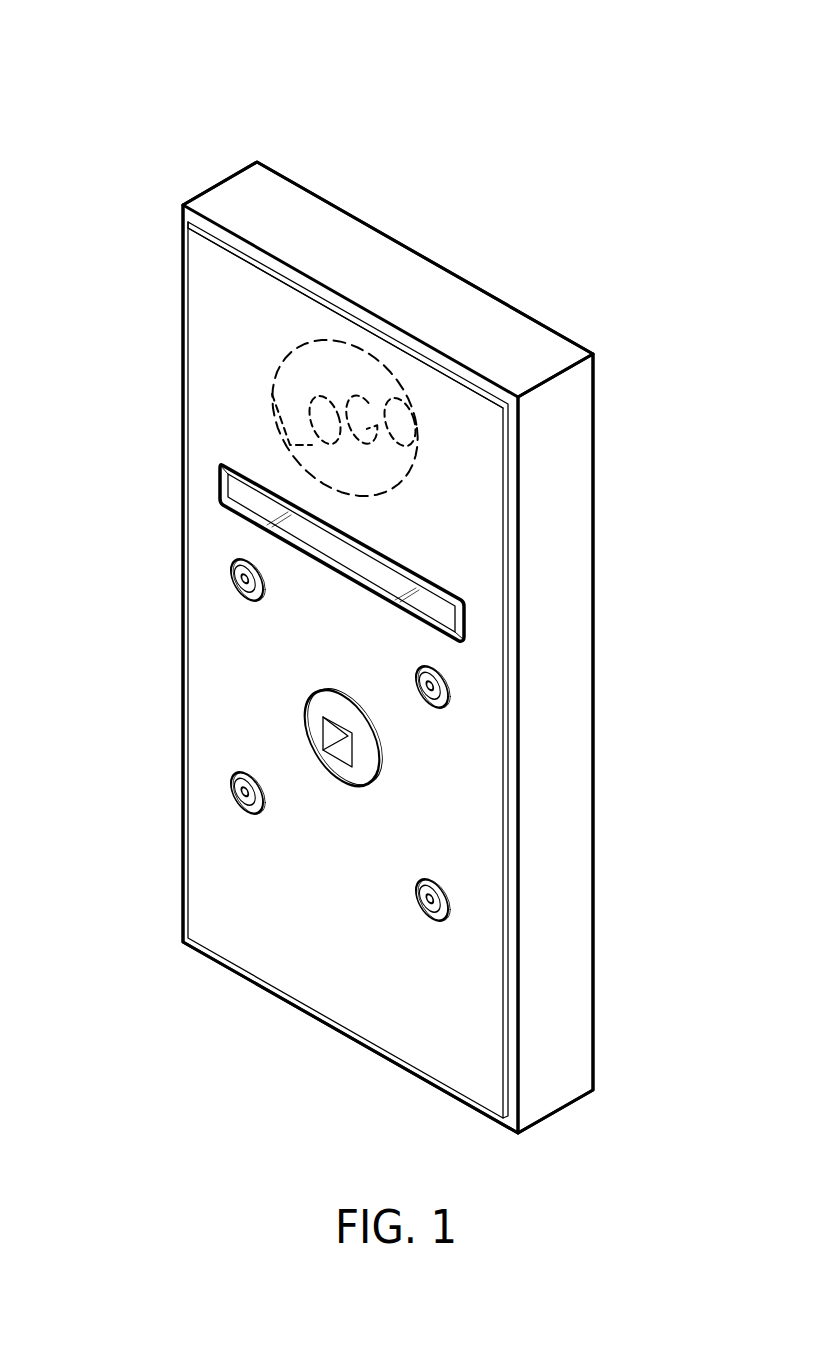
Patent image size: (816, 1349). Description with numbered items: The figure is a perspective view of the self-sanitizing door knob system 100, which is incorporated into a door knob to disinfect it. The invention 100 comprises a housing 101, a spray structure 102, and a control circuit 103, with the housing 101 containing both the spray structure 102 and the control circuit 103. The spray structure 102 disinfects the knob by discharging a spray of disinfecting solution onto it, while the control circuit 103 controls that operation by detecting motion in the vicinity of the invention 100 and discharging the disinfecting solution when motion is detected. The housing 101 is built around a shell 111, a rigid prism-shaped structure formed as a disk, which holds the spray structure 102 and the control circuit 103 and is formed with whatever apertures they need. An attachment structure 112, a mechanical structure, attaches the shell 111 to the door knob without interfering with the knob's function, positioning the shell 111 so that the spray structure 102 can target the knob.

The self-sanitizing door knob system 100 is at (133, 150).
The housing 101 is at (501, 298).
The spray structure 102 is at (233, 791).
The control circuit 103 is at (222, 502).
The shell 111 is at (577, 543).
The attachment structure 112 is at (347, 747).